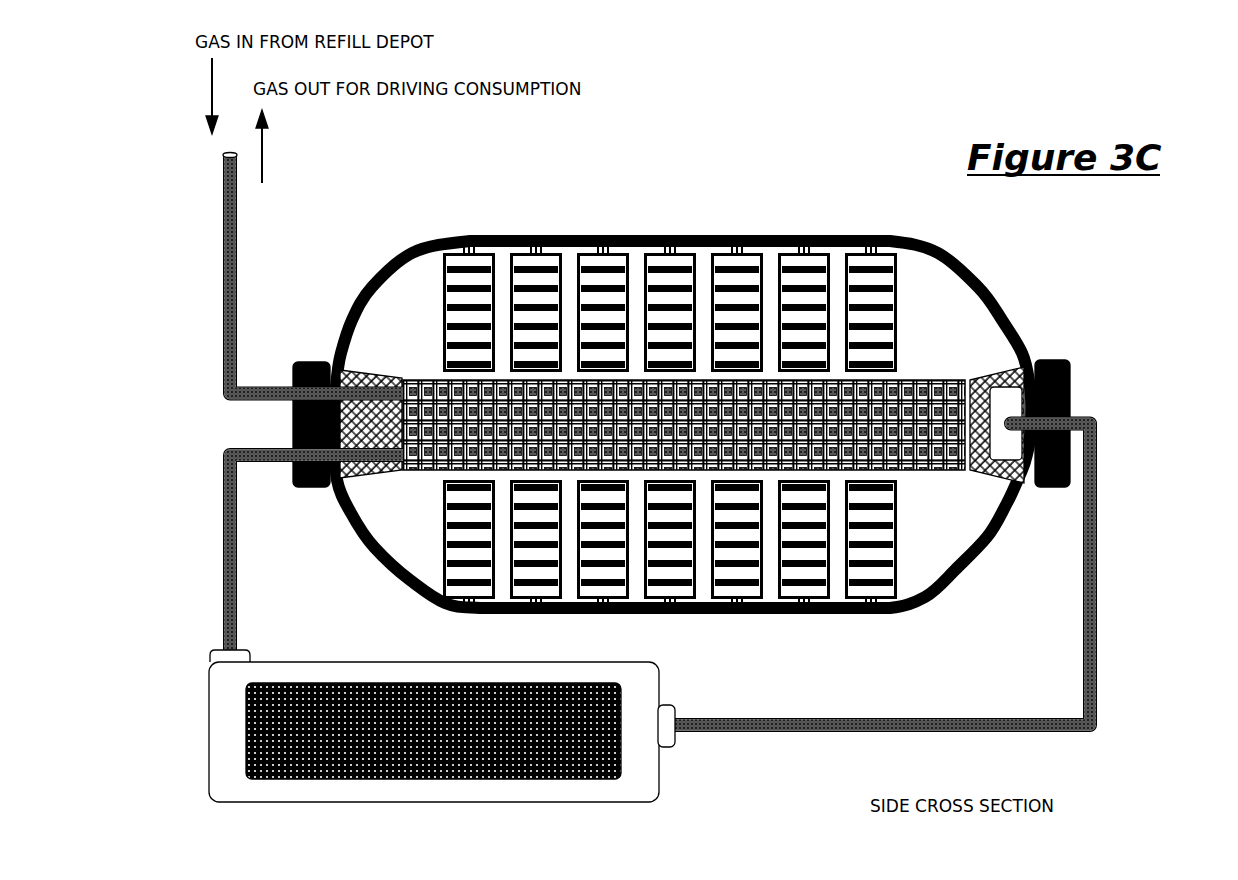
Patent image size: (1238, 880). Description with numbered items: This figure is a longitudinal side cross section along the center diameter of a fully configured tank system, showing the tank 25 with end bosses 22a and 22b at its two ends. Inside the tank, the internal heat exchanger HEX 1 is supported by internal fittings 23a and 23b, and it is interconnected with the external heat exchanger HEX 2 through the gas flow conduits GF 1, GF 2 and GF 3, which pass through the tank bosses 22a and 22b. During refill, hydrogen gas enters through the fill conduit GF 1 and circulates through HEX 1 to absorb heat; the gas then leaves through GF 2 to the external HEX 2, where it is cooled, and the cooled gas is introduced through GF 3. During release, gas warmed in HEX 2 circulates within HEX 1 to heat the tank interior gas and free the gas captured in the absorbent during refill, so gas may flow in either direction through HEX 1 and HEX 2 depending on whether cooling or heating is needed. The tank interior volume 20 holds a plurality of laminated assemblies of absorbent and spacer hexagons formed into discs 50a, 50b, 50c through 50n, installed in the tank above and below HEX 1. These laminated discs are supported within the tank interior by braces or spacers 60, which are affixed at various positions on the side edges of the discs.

The laminated absorbent disc 50a is at (463, 280).
The laminated absorbent disc 50b is at (530, 280).
The laminated absorbent disc 50c is at (595, 280).
The laminated absorbent disc 50n is at (882, 283).
The braces or spacers 60 is at (686, 238).
The tank 25 is at (647, 613).
The end boss 22a is at (307, 360).
The end boss 22b is at (1050, 358).
The internal fitting 23a is at (377, 367).
The internal fitting 23b is at (987, 368).
The tank interior volume 20 is at (395, 500).
The gas flow conduit for gas fill GF 1 is at (222, 220).
The gas flow conduit GF 2 is at (223, 492).
The gas flow conduit GF 3 is at (1097, 427).
The internal heat exchanger HEX 1 is at (930, 455).
The external heat exchanger HEX 2 is at (658, 790).